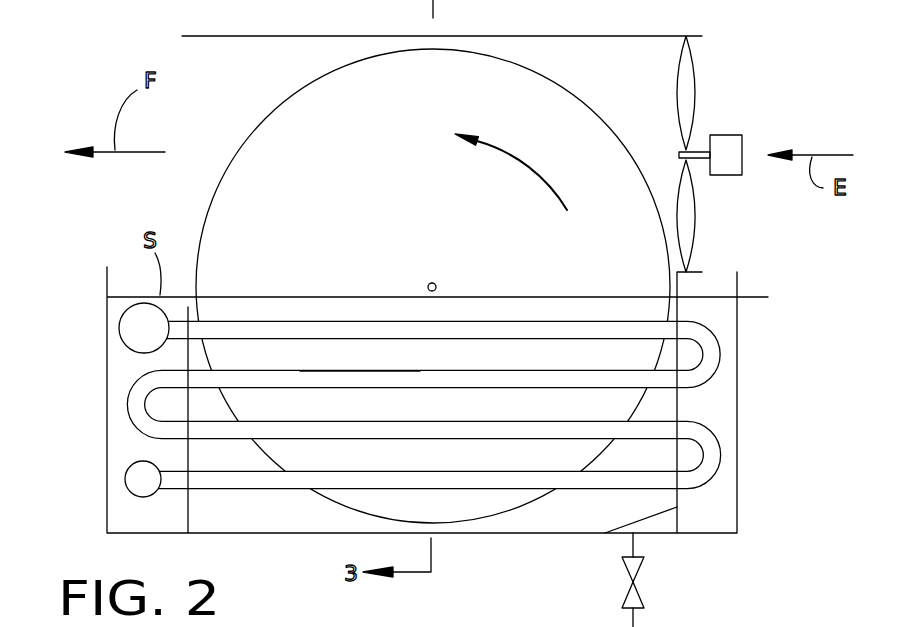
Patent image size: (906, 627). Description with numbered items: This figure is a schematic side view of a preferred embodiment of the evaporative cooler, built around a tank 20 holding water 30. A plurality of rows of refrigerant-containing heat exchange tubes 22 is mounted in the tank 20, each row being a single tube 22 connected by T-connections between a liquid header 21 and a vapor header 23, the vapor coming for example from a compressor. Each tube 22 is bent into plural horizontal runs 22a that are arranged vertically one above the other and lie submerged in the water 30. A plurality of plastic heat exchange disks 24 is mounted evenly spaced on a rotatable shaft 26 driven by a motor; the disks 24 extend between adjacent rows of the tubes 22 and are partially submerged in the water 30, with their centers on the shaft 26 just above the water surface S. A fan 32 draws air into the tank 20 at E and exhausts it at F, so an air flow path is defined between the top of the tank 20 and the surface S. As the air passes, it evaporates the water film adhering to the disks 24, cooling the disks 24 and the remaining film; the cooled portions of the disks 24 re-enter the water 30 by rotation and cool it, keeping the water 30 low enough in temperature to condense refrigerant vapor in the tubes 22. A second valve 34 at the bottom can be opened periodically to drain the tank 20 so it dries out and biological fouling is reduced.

The tank 20 is at (733, 475).
The liquid header 21 is at (127, 475).
The heat exchange tubes 22 is at (138, 403).
The horizontal runs 22a is at (290, 380).
The vapor header 23 is at (128, 325).
The heat exchange disks 24 is at (333, 226).
The rotatable shaft 26 is at (434, 283).
The water 30 is at (272, 522).
The fan 32 is at (690, 95).
The second valve 34 is at (640, 593).